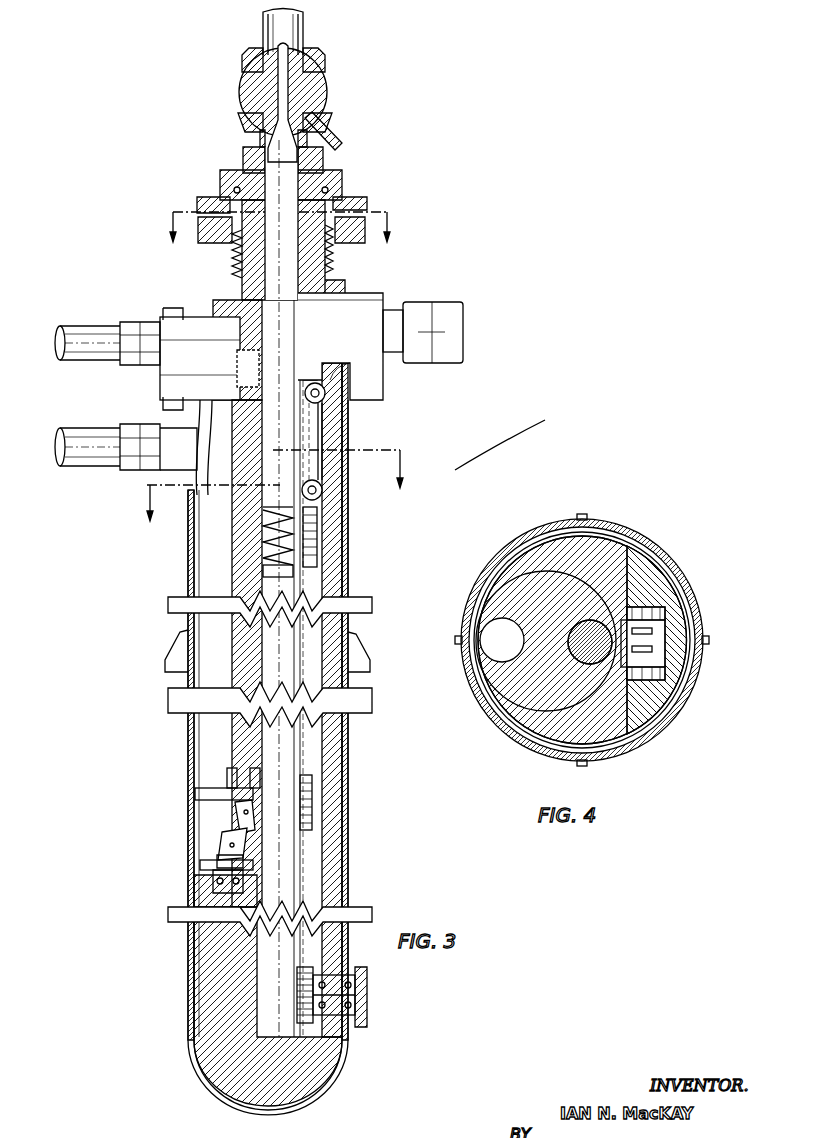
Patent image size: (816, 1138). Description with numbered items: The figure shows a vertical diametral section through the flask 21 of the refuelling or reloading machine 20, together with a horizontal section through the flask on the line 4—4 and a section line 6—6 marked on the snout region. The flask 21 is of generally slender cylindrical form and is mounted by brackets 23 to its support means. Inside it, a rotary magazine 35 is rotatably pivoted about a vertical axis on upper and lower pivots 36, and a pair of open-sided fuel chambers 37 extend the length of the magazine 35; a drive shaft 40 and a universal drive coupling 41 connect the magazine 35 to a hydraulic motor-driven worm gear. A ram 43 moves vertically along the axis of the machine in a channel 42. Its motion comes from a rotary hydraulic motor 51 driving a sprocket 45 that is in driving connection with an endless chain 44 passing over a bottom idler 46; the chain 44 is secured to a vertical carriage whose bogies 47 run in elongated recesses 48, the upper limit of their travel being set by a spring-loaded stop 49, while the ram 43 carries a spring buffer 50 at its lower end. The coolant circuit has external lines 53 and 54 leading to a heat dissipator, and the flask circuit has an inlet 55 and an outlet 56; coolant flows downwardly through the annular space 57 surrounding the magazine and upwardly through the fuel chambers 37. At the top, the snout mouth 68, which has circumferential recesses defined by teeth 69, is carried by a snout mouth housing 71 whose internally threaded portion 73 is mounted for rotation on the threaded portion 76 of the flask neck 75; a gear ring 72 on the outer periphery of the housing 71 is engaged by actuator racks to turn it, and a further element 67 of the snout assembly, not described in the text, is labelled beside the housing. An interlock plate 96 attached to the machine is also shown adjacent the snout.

In FIG. 3, the refuelling or reloading machine 20 is at (450, 473).
In FIG. 3, the flask 21 is at (348, 588).
In FIG. 4, the flask 21 is at (617, 520).
In FIG. 3, the brackets 23 is at (370, 670).
In FIG. 3, the rotary magazine 35 is at (232, 570).
In FIG. 4, the rotary magazine 35 is at (520, 690).
In FIG. 3, the pivots 36 is at (240, 335).
In FIG. 4, the fuel chambers 37 is at (583, 622).
In FIG. 3, the drive shaft 40 is at (235, 812).
In FIG. 3, the universal drive coupling 41 is at (220, 835).
In FIG. 3, the channel 42 is at (300, 780).
In FIG. 3, the ram 43 is at (290, 70).
In FIG. 3, the endless chain 44 is at (317, 520).
In FIG. 3, the sprocket 45 is at (303, 325).
In FIG. 3, the bottom idler 46 is at (297, 993).
In FIG. 3, the bogies 47 is at (305, 392).
In FIG. 4, the bogies 47 is at (648, 607).
In FIG. 3, the elongated recesses 48 is at (322, 440).
In FIG. 3, the spring-loaded stop 49 is at (360, 372).
In FIG. 3, the spring buffer 50 is at (293, 571).
In FIG. 3, the rotary hydraulic motor 51 is at (463, 335).
In FIG. 3, the external line 53 is at (92, 428).
In FIG. 3, the external line 54 is at (100, 326).
In FIG. 3, the inlet 55 is at (133, 420).
In FIG. 3, the outlet 56 is at (133, 320).
In FIG. 3, the annular space 57 is at (188, 678).
In FIG. 4, the annular space 57 is at (540, 747).
In FIG. 3, the flange 67 is at (243, 165).
In FIG. 3, the snout mouth 68 is at (336, 132).
In FIG. 3, the teeth 69 is at (318, 168).
In FIG. 3, the snout mouth housing 71 is at (342, 183).
In FIG. 3, the gear ring 72 is at (215, 243).
In FIG. 3, the internally threaded portion 73 is at (240, 272).
In FIG. 3, the flask neck 75 is at (330, 288).
In FIG. 3, the threaded portion 76 is at (338, 262).
In FIG. 3, the interlock plate 96 is at (362, 203).
In FIG. 3, the section line 4- 4 is at (274, 498).
In FIG. 3, the section line 6- 6 is at (277, 236).